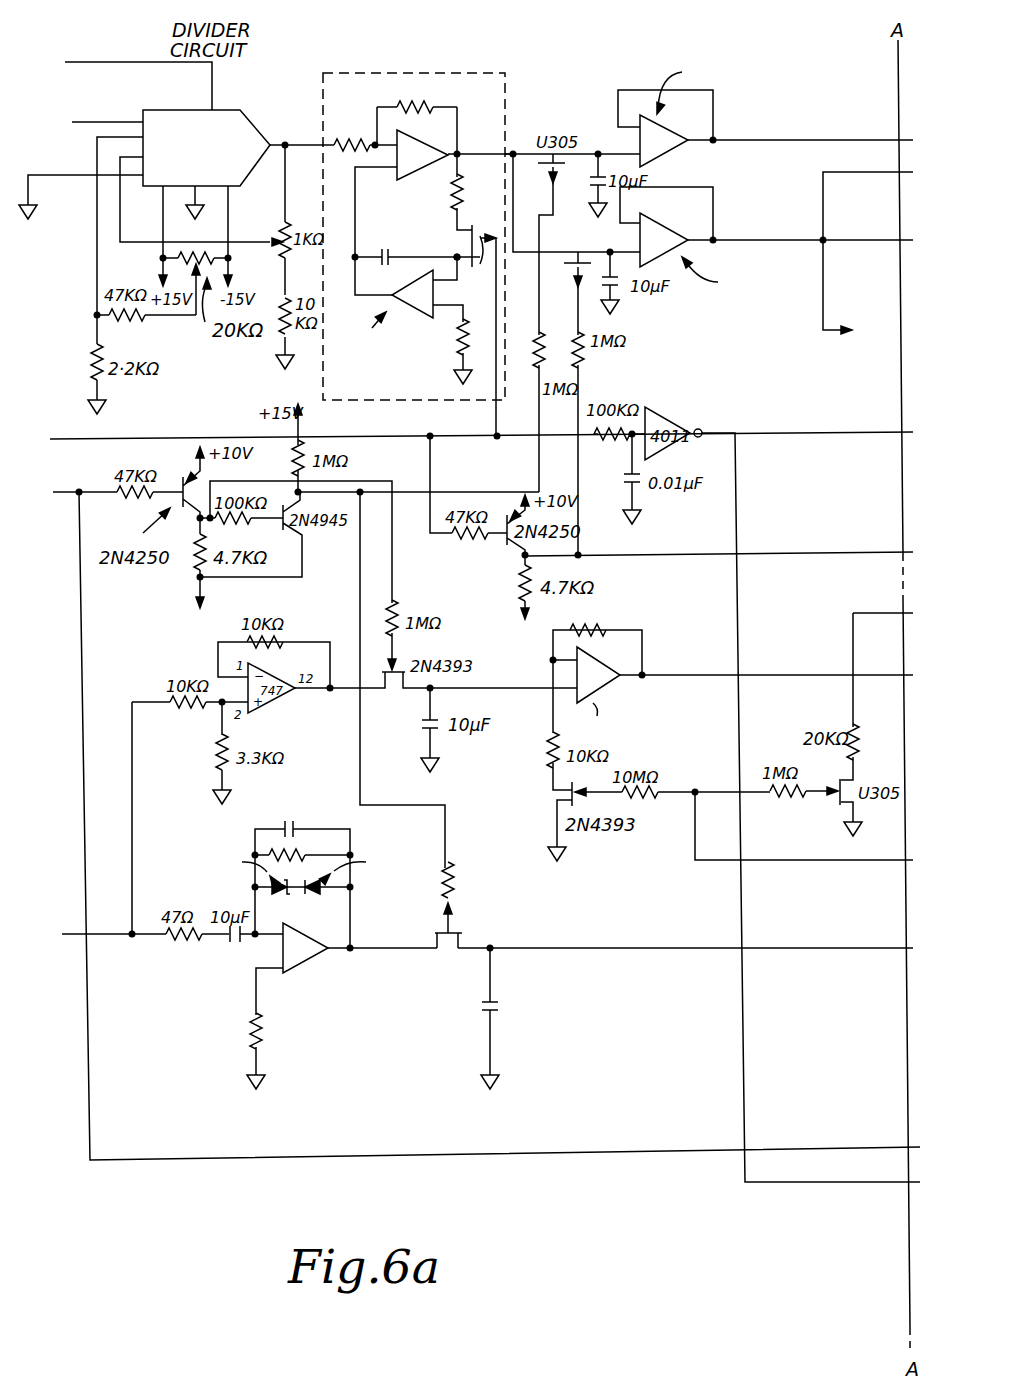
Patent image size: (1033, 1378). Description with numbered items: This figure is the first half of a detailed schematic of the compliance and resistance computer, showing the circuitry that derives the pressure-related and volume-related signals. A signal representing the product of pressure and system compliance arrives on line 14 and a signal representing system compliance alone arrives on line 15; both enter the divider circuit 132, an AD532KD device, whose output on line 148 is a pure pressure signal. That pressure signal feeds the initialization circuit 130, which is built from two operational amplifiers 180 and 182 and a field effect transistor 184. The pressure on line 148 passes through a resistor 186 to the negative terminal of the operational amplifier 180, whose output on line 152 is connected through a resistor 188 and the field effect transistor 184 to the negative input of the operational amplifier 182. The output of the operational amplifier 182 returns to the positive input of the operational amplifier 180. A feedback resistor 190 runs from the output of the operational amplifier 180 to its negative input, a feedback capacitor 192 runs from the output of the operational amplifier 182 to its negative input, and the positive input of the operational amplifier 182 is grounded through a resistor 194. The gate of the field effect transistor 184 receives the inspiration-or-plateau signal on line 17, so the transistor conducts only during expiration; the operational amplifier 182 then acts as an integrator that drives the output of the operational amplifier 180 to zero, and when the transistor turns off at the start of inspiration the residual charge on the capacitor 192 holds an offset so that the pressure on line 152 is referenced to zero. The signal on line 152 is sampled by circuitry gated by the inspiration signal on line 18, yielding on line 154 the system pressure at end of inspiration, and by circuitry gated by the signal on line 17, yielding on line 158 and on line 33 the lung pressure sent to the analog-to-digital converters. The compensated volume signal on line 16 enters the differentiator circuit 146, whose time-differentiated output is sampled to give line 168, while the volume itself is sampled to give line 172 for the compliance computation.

The line 14 is at (100, 62).
The line 15 is at (77, 122).
The line 16 is at (105, 938).
The line 17 is at (117, 437).
The line 18 is at (63, 492).
The line 33 is at (830, 282).
The initialization circuit 130 is at (428, 73).
The divider circuit 132 is at (233, 110).
The differentiator circuit 146 is at (329, 982).
The line 148 is at (293, 142).
The line 152 is at (497, 152).
The line 154 is at (738, 139).
The line 158 is at (728, 240).
The line 168 is at (527, 947).
The line 172 is at (662, 676).
The operational amplifier 180 is at (419, 145).
The operational amplifier 182 is at (413, 312).
The field effect transistor 184 is at (474, 232).
The resistor 186 is at (345, 140).
The resistor 188 is at (462, 200).
The feedback resistor 190 is at (405, 105).
The feedback capacitor 192 is at (398, 245).
The resistor 194 is at (458, 358).